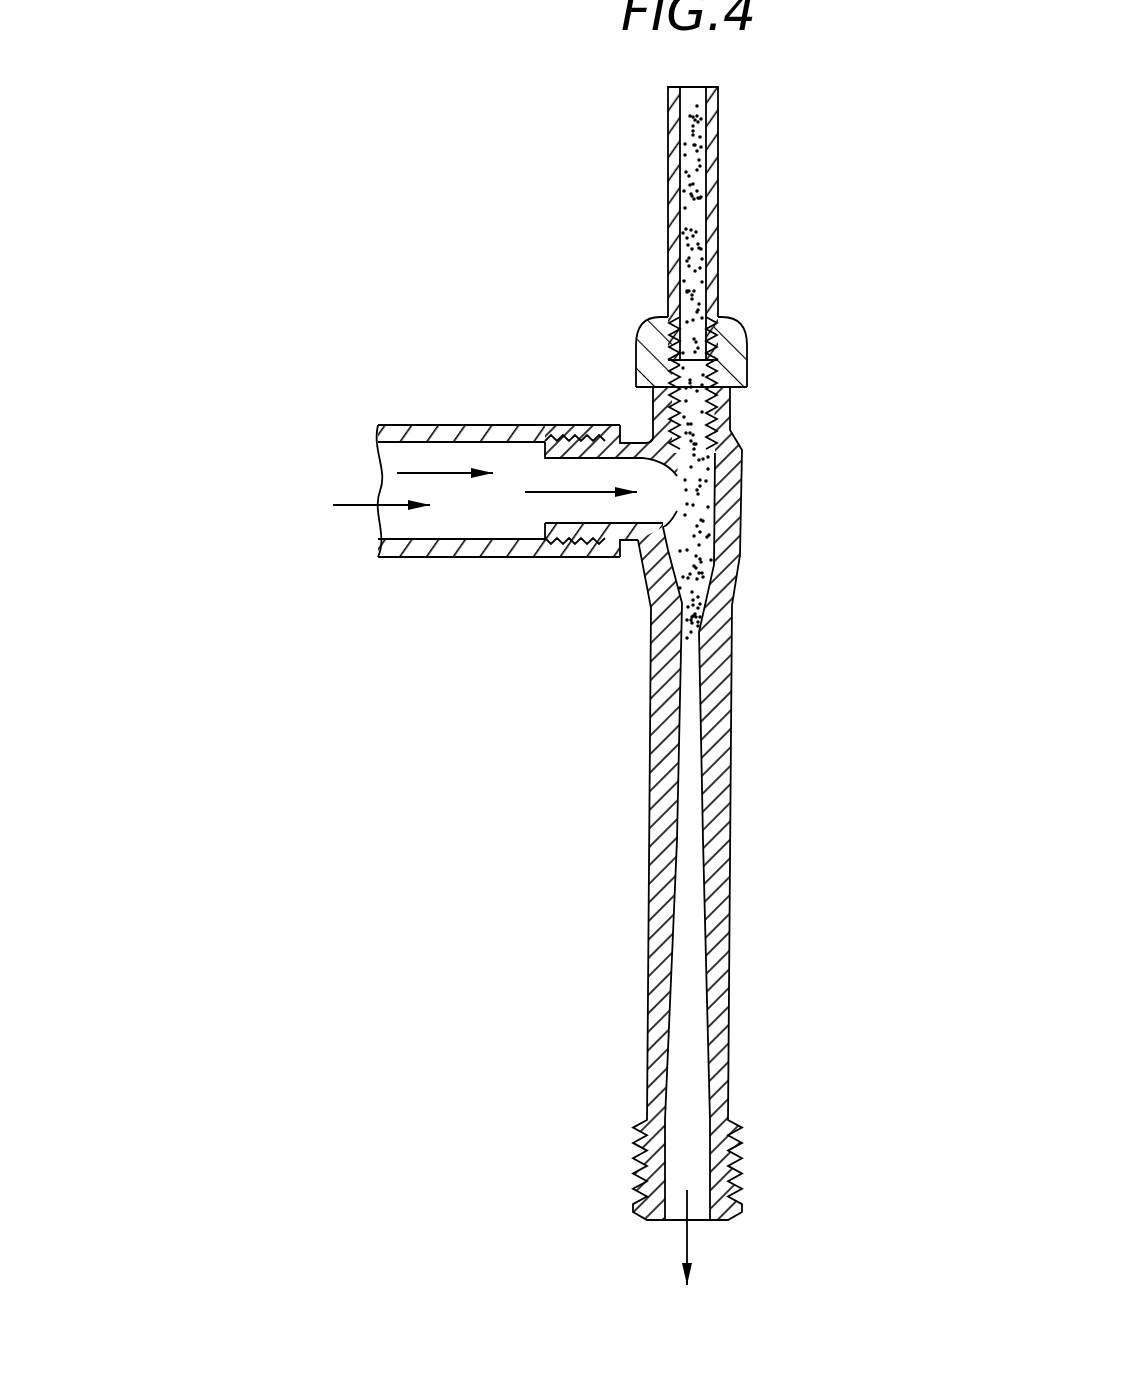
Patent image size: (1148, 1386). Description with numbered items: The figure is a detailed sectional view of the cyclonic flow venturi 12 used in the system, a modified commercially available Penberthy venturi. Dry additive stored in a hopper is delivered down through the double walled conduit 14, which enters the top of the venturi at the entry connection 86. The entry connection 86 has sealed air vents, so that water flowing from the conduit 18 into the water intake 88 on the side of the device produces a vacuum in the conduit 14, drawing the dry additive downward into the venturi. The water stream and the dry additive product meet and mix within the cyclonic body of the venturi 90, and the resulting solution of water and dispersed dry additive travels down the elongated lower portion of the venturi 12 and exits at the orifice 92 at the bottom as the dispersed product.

The venturi 12 is at (626, 737).
The double walled conduit 14 is at (718, 248).
The conduit 18 is at (443, 510).
The entry connection 86 is at (738, 337).
The water intake 88 is at (590, 515).
The cyclonic body of the venturi 90 is at (703, 492).
The orifice 92 is at (698, 1222).